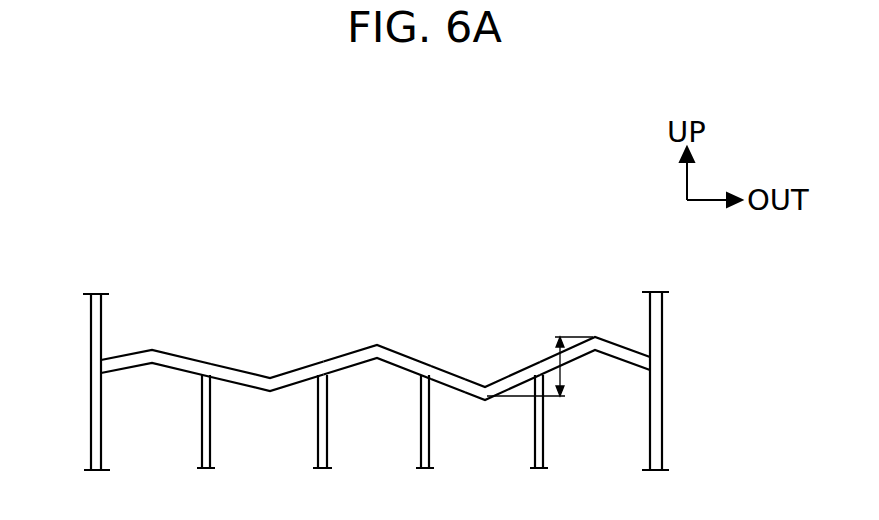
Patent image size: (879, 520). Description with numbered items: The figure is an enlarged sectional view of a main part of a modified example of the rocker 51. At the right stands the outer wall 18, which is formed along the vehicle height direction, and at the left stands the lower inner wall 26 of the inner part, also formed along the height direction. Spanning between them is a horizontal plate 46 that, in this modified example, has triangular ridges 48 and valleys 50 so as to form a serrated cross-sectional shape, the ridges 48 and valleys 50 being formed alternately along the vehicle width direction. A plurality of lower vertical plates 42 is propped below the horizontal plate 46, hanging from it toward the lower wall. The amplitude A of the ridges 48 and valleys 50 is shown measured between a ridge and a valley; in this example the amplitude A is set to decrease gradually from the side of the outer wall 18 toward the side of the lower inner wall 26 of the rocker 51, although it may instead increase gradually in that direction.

The outer wall 18 is at (656, 337).
The lower inner wall 26 is at (92, 342).
The lower vertical plates 42 is at (199, 458).
The horizontal plate 46 is at (457, 398).
The ridges 48 is at (162, 355).
The valleys 50 is at (287, 384).
The rocker 51 is at (699, 297).
The amplitude A is at (564, 377).